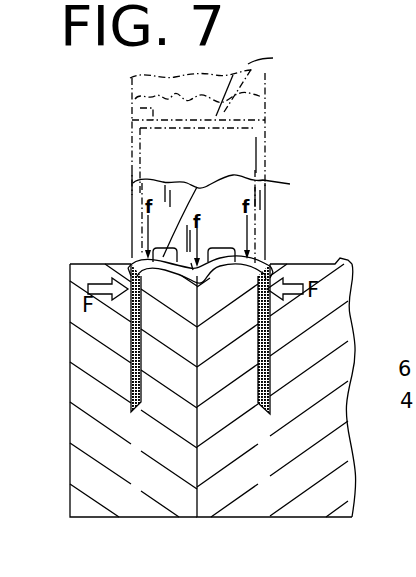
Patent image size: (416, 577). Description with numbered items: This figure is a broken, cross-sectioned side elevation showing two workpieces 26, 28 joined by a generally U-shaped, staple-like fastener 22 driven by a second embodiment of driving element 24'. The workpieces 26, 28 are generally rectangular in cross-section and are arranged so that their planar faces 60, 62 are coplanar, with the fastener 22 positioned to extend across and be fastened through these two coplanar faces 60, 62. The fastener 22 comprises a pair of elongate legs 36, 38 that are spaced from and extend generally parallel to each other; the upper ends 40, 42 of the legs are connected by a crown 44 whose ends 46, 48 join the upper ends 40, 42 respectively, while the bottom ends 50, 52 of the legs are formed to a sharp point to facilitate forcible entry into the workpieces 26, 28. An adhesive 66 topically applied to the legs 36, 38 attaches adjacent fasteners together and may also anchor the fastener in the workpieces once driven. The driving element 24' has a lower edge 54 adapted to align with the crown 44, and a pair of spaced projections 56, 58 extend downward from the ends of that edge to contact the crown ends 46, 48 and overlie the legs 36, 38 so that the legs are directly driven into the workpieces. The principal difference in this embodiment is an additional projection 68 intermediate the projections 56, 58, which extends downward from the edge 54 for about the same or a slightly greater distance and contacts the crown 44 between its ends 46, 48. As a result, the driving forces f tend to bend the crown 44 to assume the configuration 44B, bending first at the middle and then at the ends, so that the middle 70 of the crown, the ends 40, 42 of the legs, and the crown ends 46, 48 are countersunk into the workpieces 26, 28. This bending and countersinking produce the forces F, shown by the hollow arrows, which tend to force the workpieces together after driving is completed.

The fastener 22 is at (271, 381).
The driving element 24' is at (243, 166).
The workpiece 26 is at (138, 487).
The workpiece 28 is at (297, 487).
The leg 36 is at (137, 356).
The leg 38 is at (268, 342).
The upper end 40 is at (129, 264).
The upper end 42 is at (275, 125).
The crown 44 is at (240, 72).
The bent crown configuration 44B is at (218, 207).
The crown end 46 is at (132, 118).
The crown end 48 is at (267, 107).
The bottom end 50 is at (132, 252).
The bottom end 52 is at (266, 250).
The lower edge 54 is at (150, 68).
The projection 56 is at (130, 91).
The projection 58 is at (272, 93).
The planar face 60 is at (78, 262).
The planar face 62 is at (352, 262).
The adhesive 66 is at (142, 360).
The projection 68 is at (192, 128).
The middle of the crown 70 is at (200, 276).